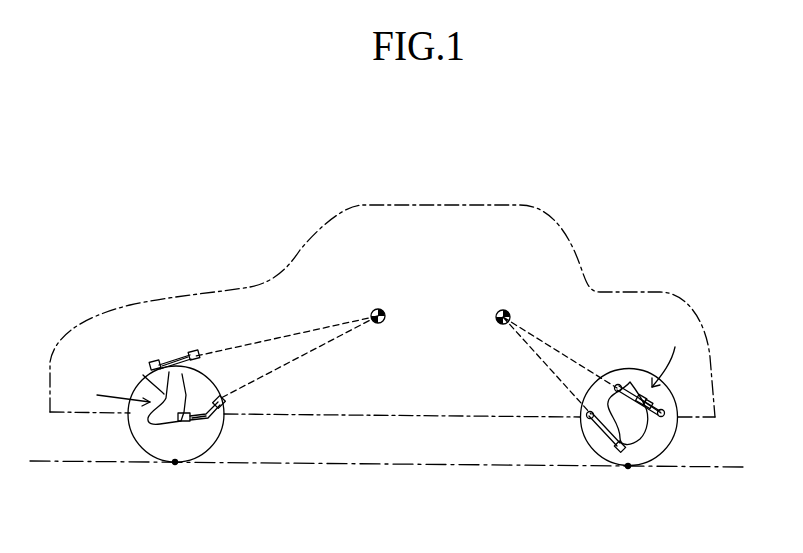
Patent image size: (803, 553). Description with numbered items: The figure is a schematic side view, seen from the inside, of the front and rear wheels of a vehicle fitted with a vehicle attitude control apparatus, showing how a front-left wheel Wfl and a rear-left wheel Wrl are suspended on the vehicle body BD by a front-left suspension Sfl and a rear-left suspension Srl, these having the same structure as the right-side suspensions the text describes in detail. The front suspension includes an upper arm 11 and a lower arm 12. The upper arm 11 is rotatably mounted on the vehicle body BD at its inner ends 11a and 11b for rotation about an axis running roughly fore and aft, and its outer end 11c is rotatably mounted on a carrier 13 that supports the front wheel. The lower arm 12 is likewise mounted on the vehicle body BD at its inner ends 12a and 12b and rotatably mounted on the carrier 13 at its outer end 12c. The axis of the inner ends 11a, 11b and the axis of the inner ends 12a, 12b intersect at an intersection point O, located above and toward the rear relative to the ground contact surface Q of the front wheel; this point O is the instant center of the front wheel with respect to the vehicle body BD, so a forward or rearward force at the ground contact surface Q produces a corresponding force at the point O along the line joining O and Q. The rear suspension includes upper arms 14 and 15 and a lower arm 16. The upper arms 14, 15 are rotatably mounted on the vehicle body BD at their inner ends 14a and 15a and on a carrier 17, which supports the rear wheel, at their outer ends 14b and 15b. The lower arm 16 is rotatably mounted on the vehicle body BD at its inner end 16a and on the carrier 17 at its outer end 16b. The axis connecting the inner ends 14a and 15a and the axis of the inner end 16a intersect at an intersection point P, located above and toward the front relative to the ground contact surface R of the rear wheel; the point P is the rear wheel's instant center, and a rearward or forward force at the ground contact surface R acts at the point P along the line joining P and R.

The upper arm 11 is at (202, 359).
The inner end of upper arm 11a is at (153, 362).
The inner end of upper arm 11b is at (200, 351).
The outer end of upper arm 11c is at (176, 364).
The lower arm 12 is at (198, 422).
The inner end of lower arm 12a is at (184, 421).
The inner end of lower arm 12b is at (224, 404).
The outer end of lower arm 12c is at (208, 418).
The carrier 13 is at (143, 392).
The upper arm 14 is at (632, 390).
The inner end of upper arm 14a is at (616, 387).
The outer end of upper arm 14b is at (645, 386).
The upper arm 15 is at (660, 402).
The inner end of upper arm 15a is at (672, 418).
The outer end of upper arm 15b is at (653, 395).
The lower arm 16 is at (604, 432).
The inner end of lower arm 16a is at (588, 416).
The outer end of lower arm 16b is at (620, 448).
The carrier 17 is at (650, 428).
The vehicle body BD is at (404, 417).
The intersection point O is at (299, 345).
The intersection point P is at (548, 353).
The ground contact surface Q is at (175, 477).
The ground contact surface R is at (628, 481).
The front-left wheel Wfl is at (139, 454).
The rear-left wheel Wrl is at (668, 450).
The front-left suspension Sfl is at (111, 396).
The rear-left suspension Srl is at (669, 354).